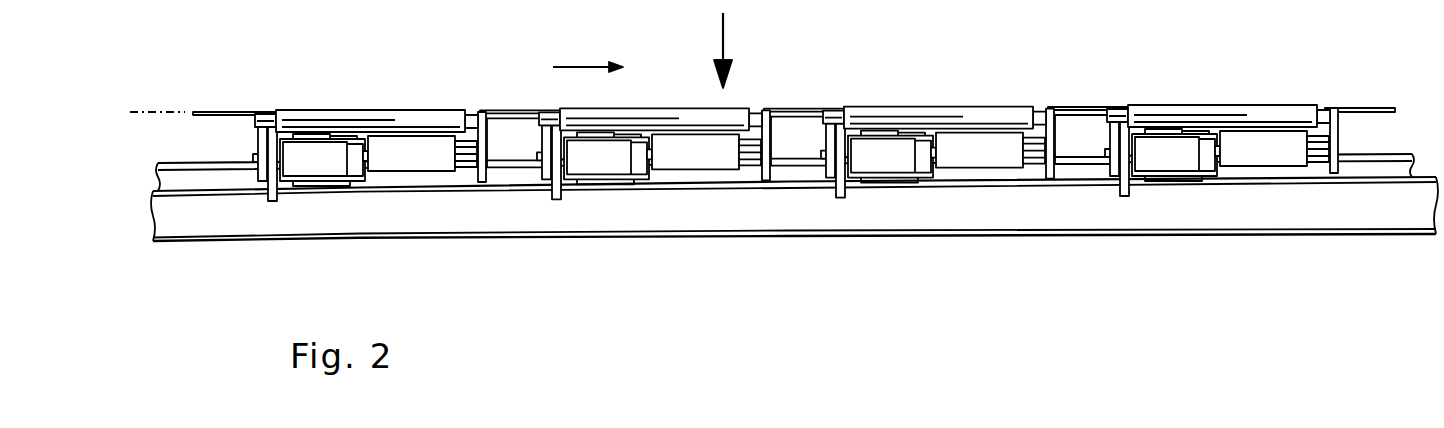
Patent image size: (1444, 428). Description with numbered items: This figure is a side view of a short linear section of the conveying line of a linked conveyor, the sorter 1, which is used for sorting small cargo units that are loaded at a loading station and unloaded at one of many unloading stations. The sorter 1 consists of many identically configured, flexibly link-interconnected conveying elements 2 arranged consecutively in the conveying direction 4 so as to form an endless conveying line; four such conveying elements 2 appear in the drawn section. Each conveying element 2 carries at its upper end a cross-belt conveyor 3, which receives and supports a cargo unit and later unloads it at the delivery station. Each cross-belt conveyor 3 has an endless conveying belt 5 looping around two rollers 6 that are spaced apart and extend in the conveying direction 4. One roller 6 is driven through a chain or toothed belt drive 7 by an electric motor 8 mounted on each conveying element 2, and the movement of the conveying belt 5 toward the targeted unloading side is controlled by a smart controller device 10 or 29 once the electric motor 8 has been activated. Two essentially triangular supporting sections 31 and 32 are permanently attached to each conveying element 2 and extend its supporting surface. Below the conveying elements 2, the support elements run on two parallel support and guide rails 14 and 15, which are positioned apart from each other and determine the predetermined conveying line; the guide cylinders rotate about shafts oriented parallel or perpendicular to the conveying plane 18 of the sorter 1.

The sorter 1 is at (784, 146).
The conveying element 2 is at (794, 157).
The cross-belt conveyor 3 is at (807, 112).
The conveying direction 4 is at (584, 62).
The conveying belt 5 is at (362, 116).
The roller 6 is at (265, 118).
The chain or toothed belt drive 7 is at (827, 142).
The electric motor 8 is at (313, 163).
The controller device 10 is at (412, 157).
The controller device 29 is at (846, 209).
The support and guide rail 14 is at (207, 178).
The support and guide rail 15 is at (963, 210).
The conveying plane 18 is at (165, 98).
The supporting section 31 is at (505, 120).
The supporting section 32 is at (210, 111).